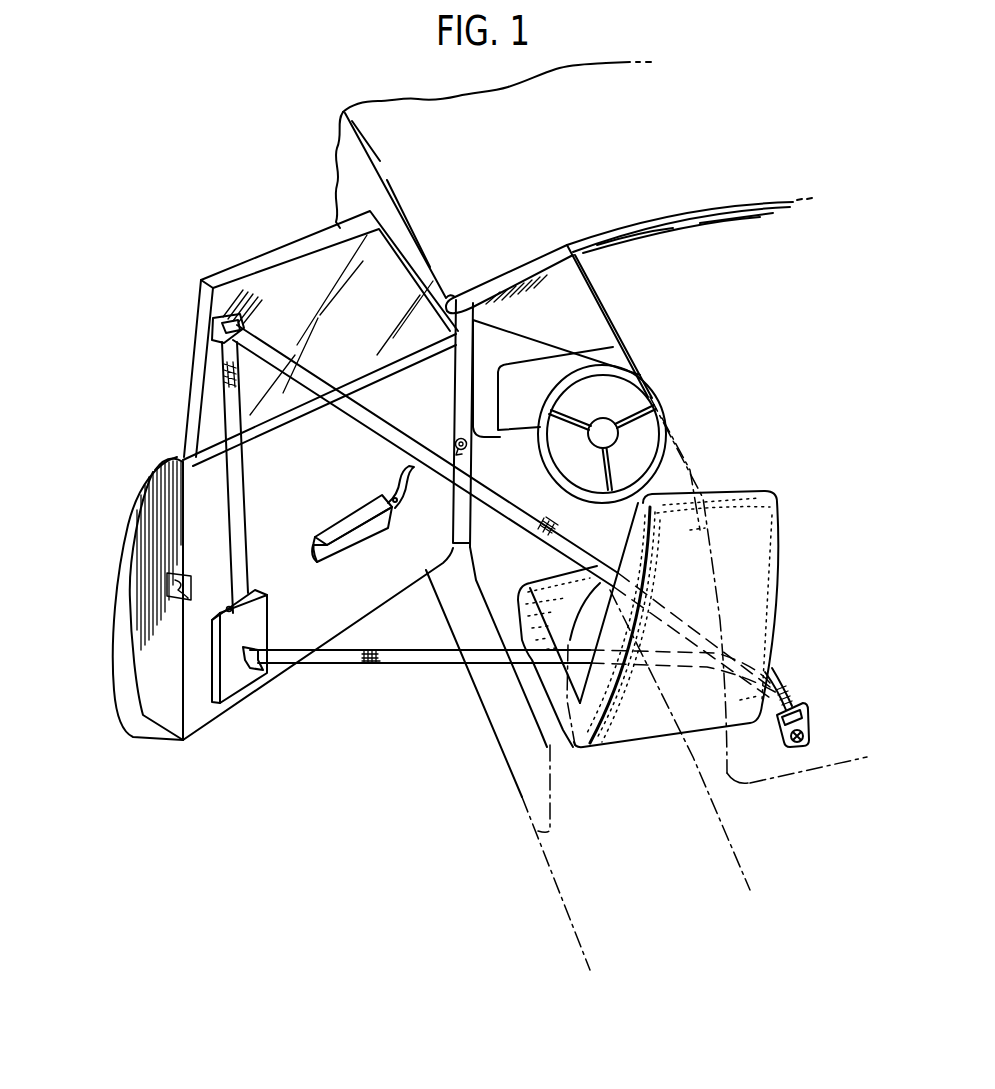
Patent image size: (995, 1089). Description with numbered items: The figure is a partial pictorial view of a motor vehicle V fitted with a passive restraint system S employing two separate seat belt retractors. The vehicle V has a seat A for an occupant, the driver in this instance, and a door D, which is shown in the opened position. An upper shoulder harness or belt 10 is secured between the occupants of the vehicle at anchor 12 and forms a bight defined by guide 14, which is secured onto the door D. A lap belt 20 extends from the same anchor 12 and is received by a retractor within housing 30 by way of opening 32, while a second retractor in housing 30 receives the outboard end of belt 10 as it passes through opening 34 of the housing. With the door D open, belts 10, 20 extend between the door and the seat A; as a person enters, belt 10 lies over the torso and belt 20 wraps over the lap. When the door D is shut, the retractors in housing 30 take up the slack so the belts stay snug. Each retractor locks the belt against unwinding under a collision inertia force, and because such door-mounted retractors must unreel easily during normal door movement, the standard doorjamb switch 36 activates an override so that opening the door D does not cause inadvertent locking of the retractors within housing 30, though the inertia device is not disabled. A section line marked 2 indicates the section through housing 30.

The shoulder belt 10 is at (367, 413).
The anchor 12 is at (804, 720).
The guide 14 is at (243, 320).
The lap belt 20 is at (432, 664).
The housing 30 is at (265, 627).
The opening 32 is at (263, 672).
The opening 34 is at (228, 607).
The doorjamb switch 36 is at (467, 450).
The seat A is at (741, 486).
The door D is at (146, 459).
The motor vehicle V is at (657, 177).
The passive restraint system S is at (402, 766).
The section line 2- 2 is at (212, 637).